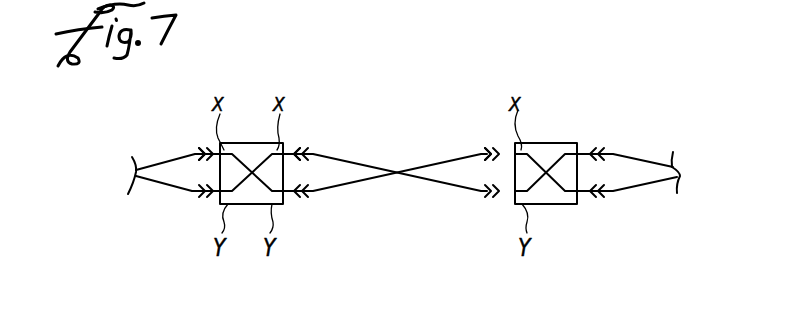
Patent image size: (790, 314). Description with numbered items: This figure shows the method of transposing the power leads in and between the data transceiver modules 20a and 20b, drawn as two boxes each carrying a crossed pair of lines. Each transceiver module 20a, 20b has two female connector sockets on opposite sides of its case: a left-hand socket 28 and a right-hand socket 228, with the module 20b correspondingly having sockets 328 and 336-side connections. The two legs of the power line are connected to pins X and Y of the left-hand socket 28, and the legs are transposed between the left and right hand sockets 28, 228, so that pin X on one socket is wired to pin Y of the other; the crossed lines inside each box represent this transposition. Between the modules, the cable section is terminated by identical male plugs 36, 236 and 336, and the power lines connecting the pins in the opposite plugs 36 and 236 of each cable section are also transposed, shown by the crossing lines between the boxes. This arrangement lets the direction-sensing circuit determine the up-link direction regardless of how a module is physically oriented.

The data transceiver module 20a is at (248, 143).
The data transceiver module 20b is at (543, 143).
The female connector socket 28 is at (207, 151).
The male plug 36 is at (202, 153).
The female connector socket 228 is at (295, 153).
The male plug 236 is at (302, 154).
The input arrows of second switching element 328 is at (497, 150).
The input line to second switching element 336 is at (485, 152).